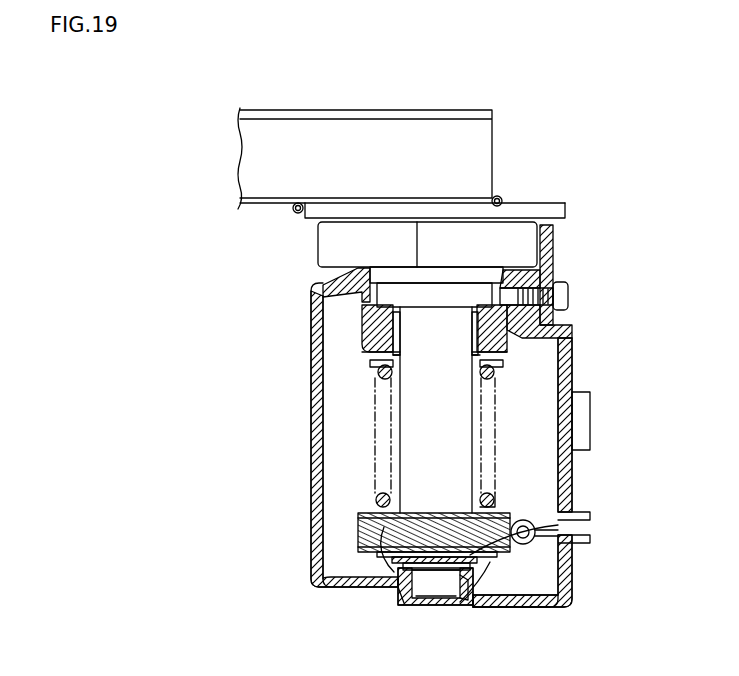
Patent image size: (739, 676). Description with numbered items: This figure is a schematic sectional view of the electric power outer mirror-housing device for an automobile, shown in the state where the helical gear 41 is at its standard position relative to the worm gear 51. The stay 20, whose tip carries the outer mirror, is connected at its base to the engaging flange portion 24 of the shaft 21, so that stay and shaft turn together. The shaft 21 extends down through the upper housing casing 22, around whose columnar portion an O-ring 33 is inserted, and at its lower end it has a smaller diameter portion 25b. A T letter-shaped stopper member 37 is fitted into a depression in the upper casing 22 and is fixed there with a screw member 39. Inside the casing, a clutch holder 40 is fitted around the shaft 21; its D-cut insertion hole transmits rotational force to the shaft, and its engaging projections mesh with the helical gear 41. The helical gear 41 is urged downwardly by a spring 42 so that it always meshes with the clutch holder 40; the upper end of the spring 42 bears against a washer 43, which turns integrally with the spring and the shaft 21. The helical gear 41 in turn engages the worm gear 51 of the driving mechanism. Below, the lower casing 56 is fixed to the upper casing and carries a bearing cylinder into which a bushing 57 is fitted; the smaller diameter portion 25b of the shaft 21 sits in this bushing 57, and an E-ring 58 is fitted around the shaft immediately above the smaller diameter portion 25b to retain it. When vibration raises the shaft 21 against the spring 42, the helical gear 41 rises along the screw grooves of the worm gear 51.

The stay 20 is at (456, 112).
The engaging flange portion 24 is at (511, 250).
The stopper member 37 is at (560, 241).
The screw member 39 is at (568, 295).
The O-ring 33 is at (364, 290).
The washer 43 is at (370, 365).
The upper housing casing 22 is at (304, 403).
The shaft 21 is at (432, 424).
The spring 42 is at (497, 512).
The helical gear 41 is at (370, 540).
The worm gear 51 is at (535, 538).
The lower casing 56 is at (300, 572).
The clutch holder 40 is at (385, 563).
The smaller diameter portion 25b is at (437, 585).
The bushing 57 is at (462, 585).
The E-ring 58 is at (527, 597).